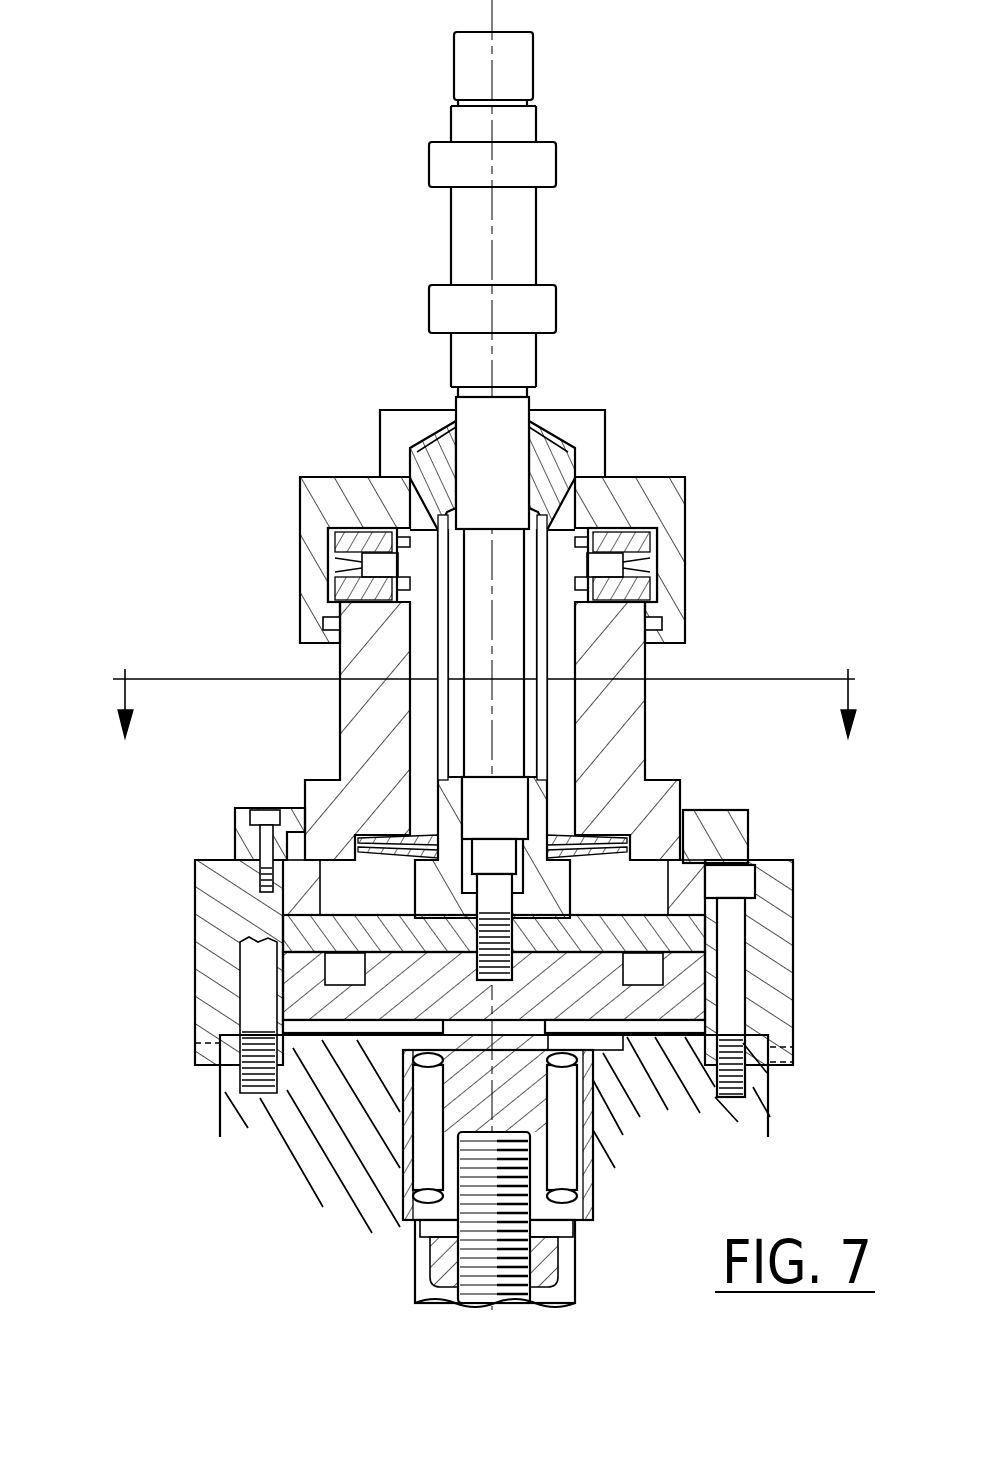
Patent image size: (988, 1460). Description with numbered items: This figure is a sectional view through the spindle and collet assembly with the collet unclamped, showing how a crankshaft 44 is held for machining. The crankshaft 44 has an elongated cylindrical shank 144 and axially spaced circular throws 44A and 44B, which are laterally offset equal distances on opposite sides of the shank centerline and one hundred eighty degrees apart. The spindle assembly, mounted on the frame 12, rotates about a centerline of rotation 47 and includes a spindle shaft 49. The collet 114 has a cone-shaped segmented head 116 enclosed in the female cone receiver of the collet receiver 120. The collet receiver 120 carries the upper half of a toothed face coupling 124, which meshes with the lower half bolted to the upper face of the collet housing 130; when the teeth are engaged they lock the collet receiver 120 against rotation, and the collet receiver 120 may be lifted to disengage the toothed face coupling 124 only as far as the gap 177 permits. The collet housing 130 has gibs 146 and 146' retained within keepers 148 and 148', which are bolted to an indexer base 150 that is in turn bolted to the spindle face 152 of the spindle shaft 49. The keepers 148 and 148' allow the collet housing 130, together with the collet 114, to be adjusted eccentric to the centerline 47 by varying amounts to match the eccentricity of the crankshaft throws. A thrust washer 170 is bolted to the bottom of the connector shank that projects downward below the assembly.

The frame 12 is at (482, 703).
The crankshaft 44 is at (523, 63).
The circular throw 44A is at (547, 163).
The centerline of rotation 47 is at (493, 238).
The circular throw 44B is at (545, 315).
The cylindrical shank 144 is at (510, 425).
The cone-shaped segmented head 116 is at (553, 472).
The collet 114 is at (557, 510).
The collet receiver 120 is at (670, 498).
The toothed face coupling 124 is at (653, 563).
The gap 177 is at (653, 602).
The collet housing 130 is at (633, 740).
The keeper 148 is at (213, 836).
The keeper 148' is at (769, 821).
The gib 146 is at (250, 852).
The gib 146' is at (729, 851).
The indexer base 150 is at (220, 917).
The spindle face 152 is at (757, 1035).
The spindle shaft 49 is at (757, 1123).
The thrust washer 170 is at (577, 1230).